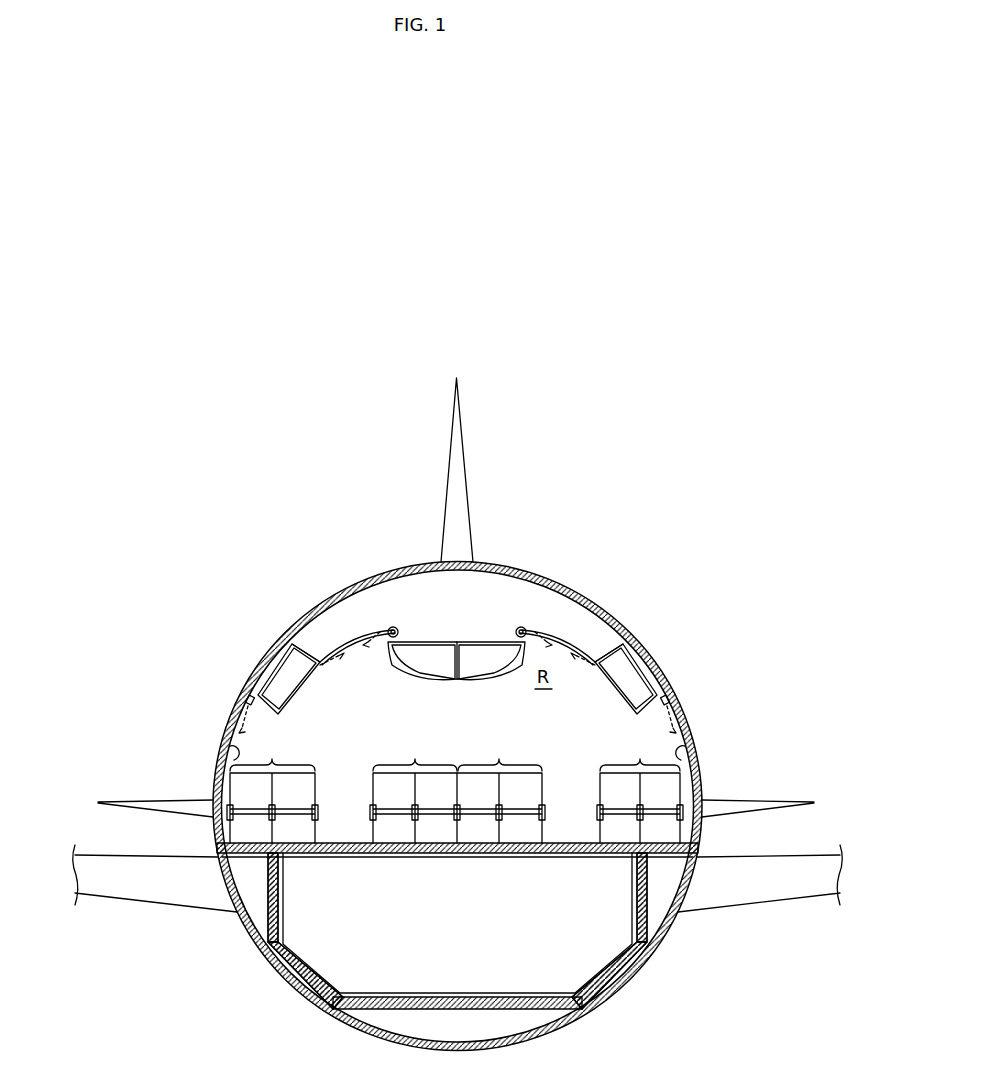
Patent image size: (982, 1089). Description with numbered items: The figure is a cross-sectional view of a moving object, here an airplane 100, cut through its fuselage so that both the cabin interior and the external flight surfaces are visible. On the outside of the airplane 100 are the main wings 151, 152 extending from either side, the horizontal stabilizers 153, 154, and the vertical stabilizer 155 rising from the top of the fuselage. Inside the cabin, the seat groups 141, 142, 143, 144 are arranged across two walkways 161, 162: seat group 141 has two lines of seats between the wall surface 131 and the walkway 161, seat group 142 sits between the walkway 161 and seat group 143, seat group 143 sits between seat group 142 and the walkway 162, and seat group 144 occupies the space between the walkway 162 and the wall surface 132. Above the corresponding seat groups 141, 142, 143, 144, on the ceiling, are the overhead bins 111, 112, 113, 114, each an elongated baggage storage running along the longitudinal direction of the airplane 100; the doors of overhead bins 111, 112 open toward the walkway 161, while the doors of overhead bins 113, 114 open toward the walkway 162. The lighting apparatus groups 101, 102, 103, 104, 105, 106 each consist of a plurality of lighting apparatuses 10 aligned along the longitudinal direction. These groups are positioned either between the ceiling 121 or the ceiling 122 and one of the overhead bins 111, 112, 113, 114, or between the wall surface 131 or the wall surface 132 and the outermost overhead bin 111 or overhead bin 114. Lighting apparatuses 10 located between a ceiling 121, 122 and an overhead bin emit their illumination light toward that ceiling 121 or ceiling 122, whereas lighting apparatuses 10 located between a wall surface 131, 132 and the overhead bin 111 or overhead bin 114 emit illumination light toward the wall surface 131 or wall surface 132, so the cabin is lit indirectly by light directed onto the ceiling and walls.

The airplane 100 is at (638, 562).
The lighting apparatus 10 is at (447, 608).
The lighting apparatus group 101 is at (250, 700).
The lighting apparatus group 102 is at (318, 651).
The lighting apparatus group 103 is at (393, 627).
The lighting apparatus group 104 is at (521, 627).
The lighting apparatus group 105 is at (597, 651).
The lighting apparatus group 106 is at (665, 700).
The overhead bin 111 is at (305, 688).
The overhead bin 112 is at (429, 668).
The overhead bin 113 is at (487, 668).
The overhead bin 114 is at (612, 683).
The ceiling 121 is at (352, 637).
The ceiling 122 is at (562, 637).
The wall surface 131 is at (228, 748).
The wall surface 132 is at (686, 748).
The seat group 141 is at (272, 758).
The seat group 142 is at (415, 758).
The seat group 143 is at (499, 758).
The seat group 144 is at (640, 758).
The main wing 151 is at (143, 888).
The main wing 152 is at (768, 888).
The horizontal stabilizer 153 is at (140, 803).
The horizontal stabilizer 154 is at (765, 800).
The vertical stabilizer 155 is at (461, 421).
The walkway 161 is at (347, 833).
The walkway 162 is at (573, 833).